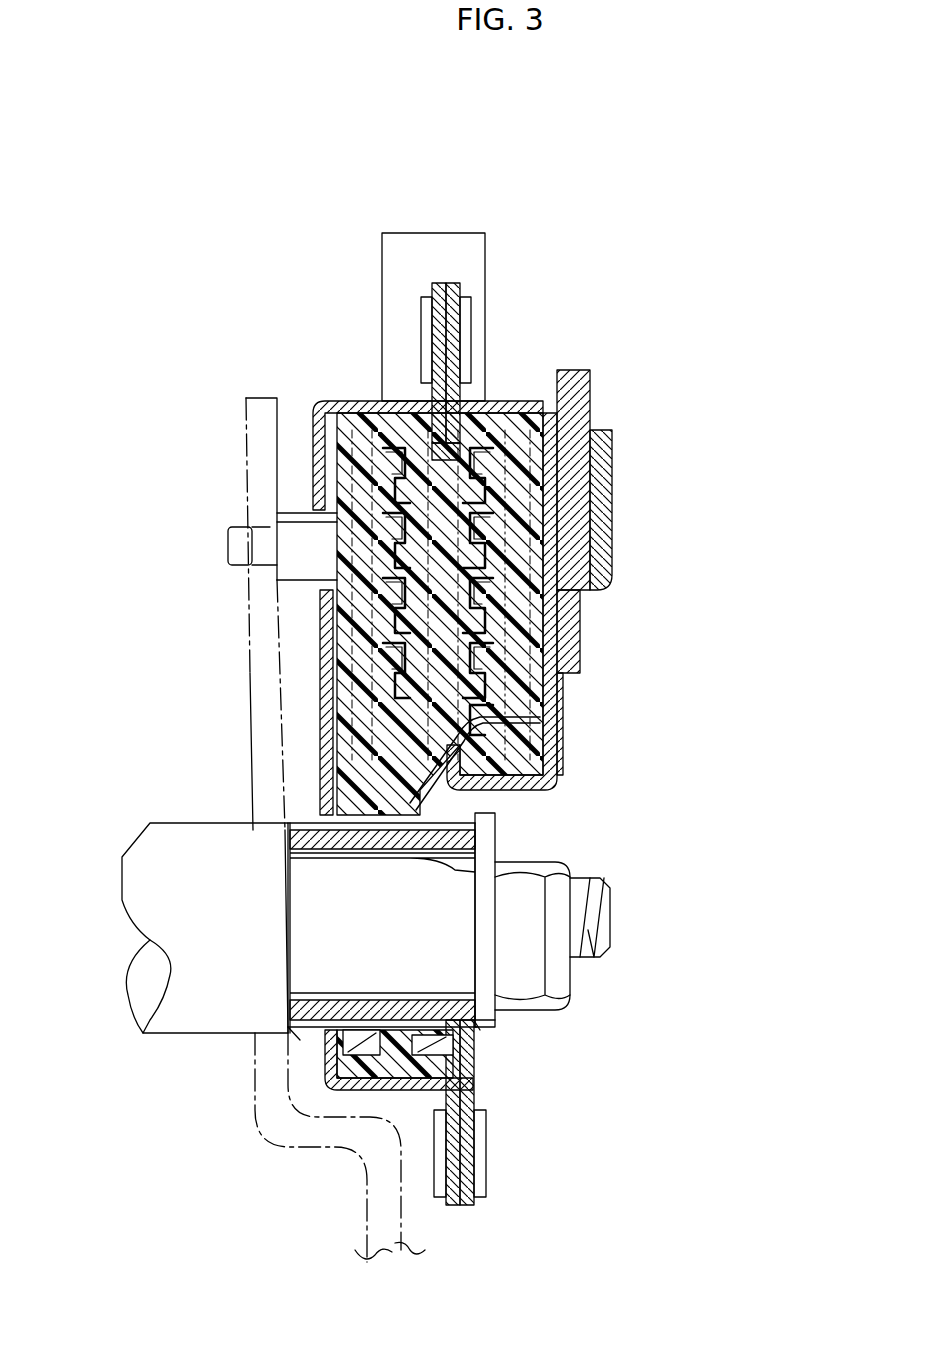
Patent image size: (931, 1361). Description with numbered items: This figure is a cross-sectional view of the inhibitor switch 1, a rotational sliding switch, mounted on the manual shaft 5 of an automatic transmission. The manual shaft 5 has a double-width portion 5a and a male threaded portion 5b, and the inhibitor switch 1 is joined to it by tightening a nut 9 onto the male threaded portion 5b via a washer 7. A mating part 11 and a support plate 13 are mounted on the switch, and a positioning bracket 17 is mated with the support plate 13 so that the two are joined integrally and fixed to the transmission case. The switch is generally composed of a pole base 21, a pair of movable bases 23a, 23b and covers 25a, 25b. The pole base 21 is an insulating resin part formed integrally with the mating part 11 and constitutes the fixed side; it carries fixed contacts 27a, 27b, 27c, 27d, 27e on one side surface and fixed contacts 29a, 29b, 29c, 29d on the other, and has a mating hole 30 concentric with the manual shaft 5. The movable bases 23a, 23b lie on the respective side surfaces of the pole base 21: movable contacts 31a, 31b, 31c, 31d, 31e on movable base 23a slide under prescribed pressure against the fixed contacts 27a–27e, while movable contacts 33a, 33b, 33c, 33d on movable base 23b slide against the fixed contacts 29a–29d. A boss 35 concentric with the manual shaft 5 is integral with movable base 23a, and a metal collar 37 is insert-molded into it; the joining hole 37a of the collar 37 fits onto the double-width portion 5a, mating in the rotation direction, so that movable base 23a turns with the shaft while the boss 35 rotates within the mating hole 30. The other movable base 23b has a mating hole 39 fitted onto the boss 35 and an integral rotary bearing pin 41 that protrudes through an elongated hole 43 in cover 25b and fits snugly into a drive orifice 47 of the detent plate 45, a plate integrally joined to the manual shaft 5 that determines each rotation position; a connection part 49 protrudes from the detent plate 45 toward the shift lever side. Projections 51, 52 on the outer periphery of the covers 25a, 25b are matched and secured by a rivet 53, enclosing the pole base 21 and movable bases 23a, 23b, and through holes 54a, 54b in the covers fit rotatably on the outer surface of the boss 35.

The inhibitor switch 1 is at (514, 188).
The manual shaft 5 is at (182, 1025).
The double-width portion 5a is at (520, 1008).
The male threaded portion 5b is at (612, 912).
The washer 7 is at (482, 1027).
The nut 9 is at (575, 988).
The mating part 11 is at (440, 233).
The support plate 13 is at (614, 455).
The positioning bracket 17 is at (594, 365).
The pole base 21 is at (524, 392).
The movable base 23a is at (598, 378).
The movable base 23b is at (343, 405).
The cover 25a is at (578, 366).
The cover 25b is at (360, 393).
The fixed contact 27a is at (462, 400).
The fixed contact 27b is at (520, 500).
The fixed contact 27c is at (520, 565).
The fixed contact 27d is at (520, 625).
The fixed contact 27e is at (520, 685).
The fixed contact 29a is at (405, 468).
The fixed contact 29b is at (405, 520).
The fixed contact 29c is at (405, 600).
The fixed contact 29d is at (405, 665).
The mating hole 30 is at (480, 1083).
The movable contact 31a is at (612, 440).
The movable contact 31b is at (548, 528).
The movable contact 31c is at (548, 585).
The movable contact 31d is at (548, 645).
The movable contact 31e is at (548, 705).
The movable contact 33a is at (392, 482).
The movable contact 33b is at (392, 540).
The movable contact 33c is at (392, 625).
The movable contact 33d is at (392, 690).
The boss 35 is at (548, 806).
The collar 37 is at (520, 858).
The joining hole 37a is at (560, 865).
The mating hole 39 is at (300, 1030).
The rotary bearing pin 41 is at (230, 570).
The elongated hole 43 is at (280, 582).
The detent plate 45 is at (250, 395).
The drive orifice 47 is at (238, 543).
The connection part 49 is at (367, 1222).
The projection 51 is at (455, 287).
The projection 52 is at (437, 287).
The rivet 53 is at (470, 300).
The through hole 54a is at (530, 826).
The through hole 54b is at (288, 830).